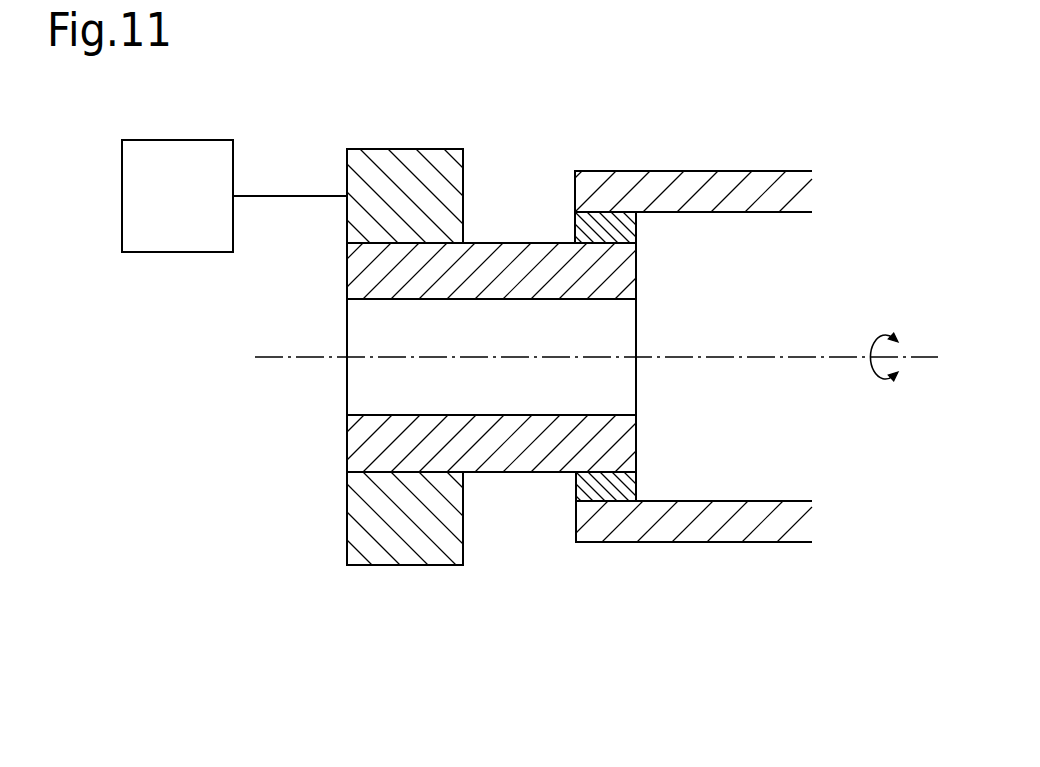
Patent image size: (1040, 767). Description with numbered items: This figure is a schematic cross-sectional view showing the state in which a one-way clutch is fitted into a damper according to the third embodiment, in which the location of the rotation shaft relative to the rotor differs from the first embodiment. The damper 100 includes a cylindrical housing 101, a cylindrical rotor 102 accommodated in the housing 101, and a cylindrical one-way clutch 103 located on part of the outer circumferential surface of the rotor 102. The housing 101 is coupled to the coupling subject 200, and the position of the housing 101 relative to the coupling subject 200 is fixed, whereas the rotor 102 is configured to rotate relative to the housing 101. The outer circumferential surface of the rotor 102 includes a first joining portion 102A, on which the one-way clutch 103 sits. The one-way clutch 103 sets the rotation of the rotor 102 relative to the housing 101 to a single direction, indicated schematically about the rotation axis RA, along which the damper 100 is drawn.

The damper 100 is at (596, 324).
The housing 101 is at (405, 149).
The rotor 102 is at (347, 263).
The first joining portion 102A is at (620, 237).
The one-way clutch 103 is at (576, 489).
The coupling subject 200 is at (178, 140).
The housing RA is at (767, 171).